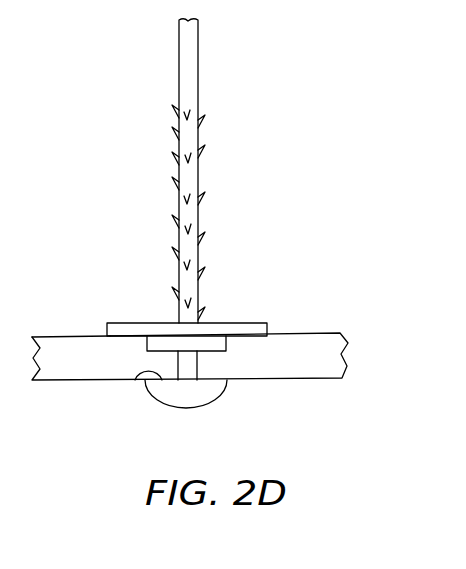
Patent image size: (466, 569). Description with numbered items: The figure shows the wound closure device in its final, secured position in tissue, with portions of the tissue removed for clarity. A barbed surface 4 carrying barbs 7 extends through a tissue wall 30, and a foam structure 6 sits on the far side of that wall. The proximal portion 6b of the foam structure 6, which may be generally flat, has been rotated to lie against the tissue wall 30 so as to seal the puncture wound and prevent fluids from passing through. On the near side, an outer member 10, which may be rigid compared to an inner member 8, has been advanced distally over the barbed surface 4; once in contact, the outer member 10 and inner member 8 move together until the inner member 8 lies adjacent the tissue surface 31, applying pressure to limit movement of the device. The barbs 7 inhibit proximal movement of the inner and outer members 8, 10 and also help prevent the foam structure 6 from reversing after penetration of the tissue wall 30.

The barbed surface 4 is at (187, 232).
The barbs 7 is at (199, 184).
The tissue surface 31 is at (76, 337).
The outer member 10 is at (252, 323).
The tissue wall 30 is at (328, 353).
The inner member 8 is at (226, 343).
The proximal portion of the foam structure 6b is at (140, 380).
The foam structure 6 is at (172, 398).